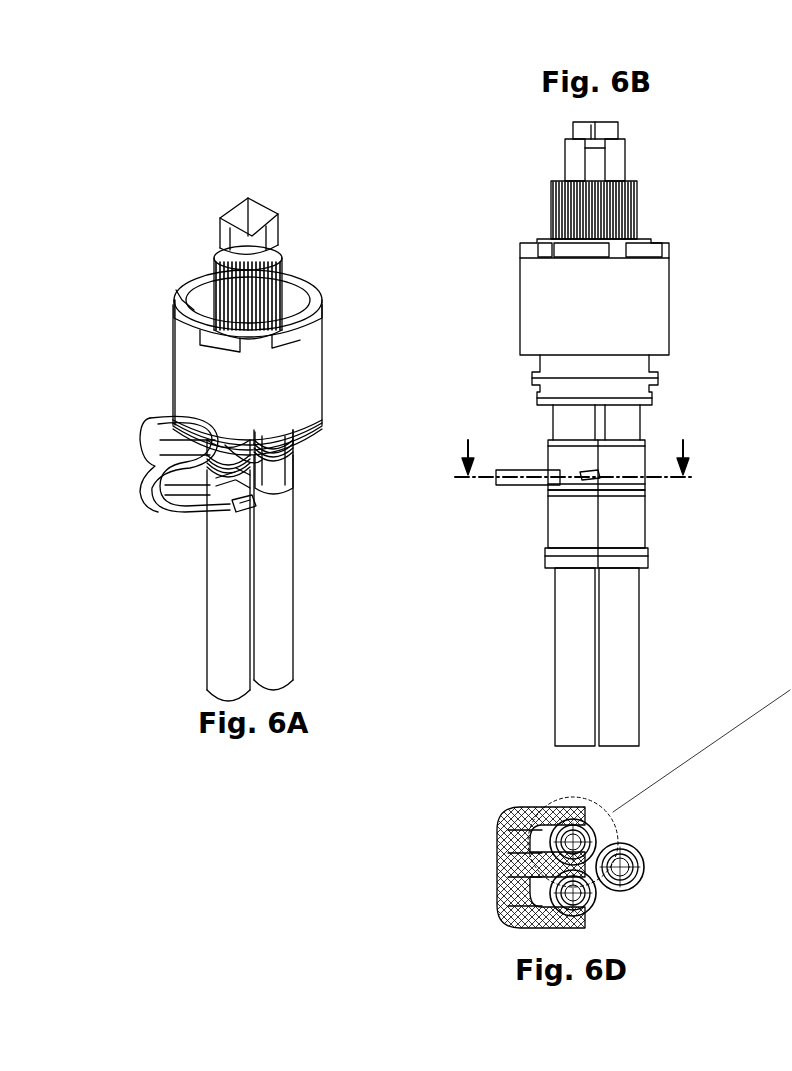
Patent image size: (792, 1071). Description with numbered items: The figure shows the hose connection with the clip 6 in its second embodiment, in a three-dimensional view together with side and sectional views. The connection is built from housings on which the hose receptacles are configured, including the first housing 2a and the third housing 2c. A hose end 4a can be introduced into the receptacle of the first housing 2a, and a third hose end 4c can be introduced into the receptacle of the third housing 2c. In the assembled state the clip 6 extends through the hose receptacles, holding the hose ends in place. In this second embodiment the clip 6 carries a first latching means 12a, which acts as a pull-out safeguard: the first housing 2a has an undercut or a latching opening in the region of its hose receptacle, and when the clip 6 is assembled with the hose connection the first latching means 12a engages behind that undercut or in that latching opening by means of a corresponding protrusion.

In FIG. 6A, the first housing 2a is at (215, 480).
In FIG. 6B, the first housing 2a is at (574, 452).
In FIG. 6A, the third housing 2c is at (284, 470).
In FIG. 6B, the third housing 2c is at (638, 447).
In FIG. 6A, the hose end 4a is at (216, 531).
In FIG. 6B, the hose end 4a is at (570, 505).
In FIG. 6A, the third hose end 4c is at (286, 509).
In FIG. 6B, the third hose end 4c is at (628, 505).
In FIG. 6A, the clip 6 is at (152, 400).
In FIG. 6B, the clip 6 is at (504, 496).
In FIG. 6A, the first latching means 12a is at (232, 508).